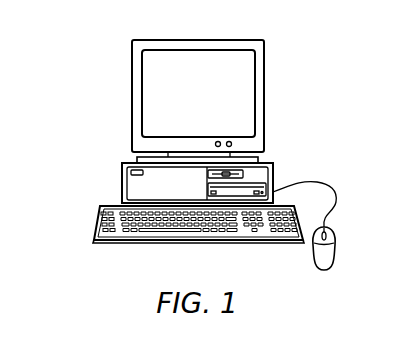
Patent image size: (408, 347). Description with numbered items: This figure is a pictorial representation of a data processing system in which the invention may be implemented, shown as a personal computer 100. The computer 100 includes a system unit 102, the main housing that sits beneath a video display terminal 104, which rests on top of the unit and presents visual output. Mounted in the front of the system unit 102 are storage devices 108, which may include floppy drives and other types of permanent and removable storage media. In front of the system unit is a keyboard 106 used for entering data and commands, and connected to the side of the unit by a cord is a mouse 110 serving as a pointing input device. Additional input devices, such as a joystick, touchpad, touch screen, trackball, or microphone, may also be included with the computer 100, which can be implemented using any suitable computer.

The computer 100 is at (74, 84).
The system unit 102 is at (122, 183).
The video display terminal 104 is at (265, 96).
The keyboard 106 is at (117, 243).
The storage devices 108 is at (268, 178).
The mouse 110 is at (324, 270).